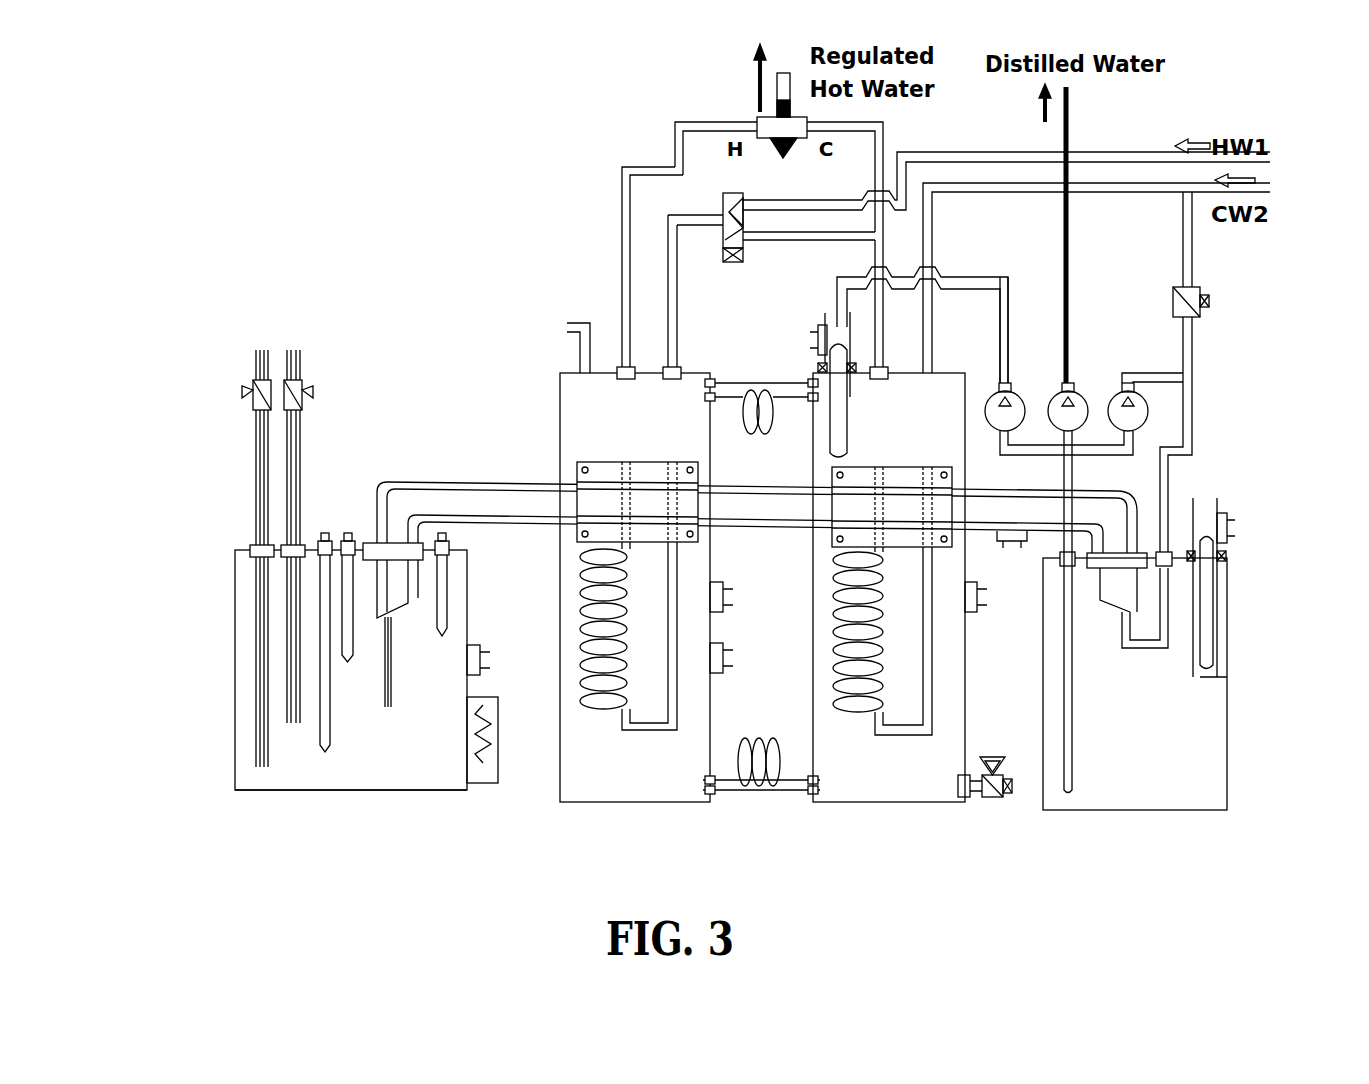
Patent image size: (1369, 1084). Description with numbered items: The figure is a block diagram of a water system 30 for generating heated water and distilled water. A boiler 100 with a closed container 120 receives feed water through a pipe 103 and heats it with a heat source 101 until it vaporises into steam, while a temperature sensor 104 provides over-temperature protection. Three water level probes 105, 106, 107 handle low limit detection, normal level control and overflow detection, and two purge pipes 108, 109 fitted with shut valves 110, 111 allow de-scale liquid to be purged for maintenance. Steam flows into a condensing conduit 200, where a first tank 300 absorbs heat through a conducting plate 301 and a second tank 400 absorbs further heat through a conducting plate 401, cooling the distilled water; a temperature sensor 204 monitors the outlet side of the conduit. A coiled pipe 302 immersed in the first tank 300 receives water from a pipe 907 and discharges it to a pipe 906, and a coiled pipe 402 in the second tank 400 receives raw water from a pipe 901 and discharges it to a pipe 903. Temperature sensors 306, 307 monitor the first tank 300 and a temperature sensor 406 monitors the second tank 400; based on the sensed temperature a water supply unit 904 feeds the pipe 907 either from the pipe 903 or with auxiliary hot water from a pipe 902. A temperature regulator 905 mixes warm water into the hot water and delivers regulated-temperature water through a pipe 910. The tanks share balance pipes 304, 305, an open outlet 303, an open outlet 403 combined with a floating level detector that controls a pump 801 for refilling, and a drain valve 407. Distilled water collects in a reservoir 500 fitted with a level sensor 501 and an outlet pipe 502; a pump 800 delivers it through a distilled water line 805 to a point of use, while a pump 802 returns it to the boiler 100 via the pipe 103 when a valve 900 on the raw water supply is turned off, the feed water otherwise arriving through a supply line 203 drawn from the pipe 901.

The water system 30 is at (306, 120).
The boiler 100 is at (240, 600).
The heat source 101 is at (478, 784).
The pipe 103 is at (392, 692).
The temperature sensor 104 is at (482, 655).
The first probe 105 is at (332, 748).
The second probe 106 is at (352, 540).
The third probe 107 is at (447, 580).
The purge pipe 108 is at (255, 750).
The purge pipe 109 is at (287, 690).
The shut valve 110 is at (240, 402).
The shut valve 111 is at (292, 420).
The closed container 120 is at (285, 793).
The condensing conduit 200 is at (478, 492).
The cold water supply pipe 203 is at (1205, 392).
The temperature sensor 204 is at (1002, 550).
The first tank 300 is at (603, 805).
The conducting plate 301 is at (597, 478).
The coiled pipe 302 is at (633, 735).
The open outlet 303 is at (575, 342).
The balance pipe 304 is at (760, 795).
The balance pipe 305 is at (757, 392).
The temperature sensor 306 is at (730, 592).
The temperature sensor 307 is at (730, 662).
The second tank 400 is at (895, 805).
The conducting plate 401 is at (830, 532).
The coiled pipe 402 is at (895, 738).
The open outlet with floating water level detector 403 is at (810, 345).
The temperature sensor 406 is at (967, 622).
The valve 407 is at (995, 800).
The reservoir 500 is at (1205, 790).
The sensor 501 is at (1230, 531).
The pipe 502 is at (1080, 700).
The pump 800 is at (1080, 374).
The pump 801 is at (1000, 377).
The pump 802 is at (1132, 377).
The distilled water line 805 is at (1062, 258).
The valve 900 is at (1208, 308).
The pipe 901 is at (1177, 194).
The pipe 902 is at (1130, 151).
The pipe 903 is at (870, 259).
The water supply unit 904 is at (723, 242).
The temperature regulator 905 is at (735, 120).
The pipe 906 is at (622, 172).
The pipe 907 is at (723, 220).
The pipe 910 is at (770, 90).